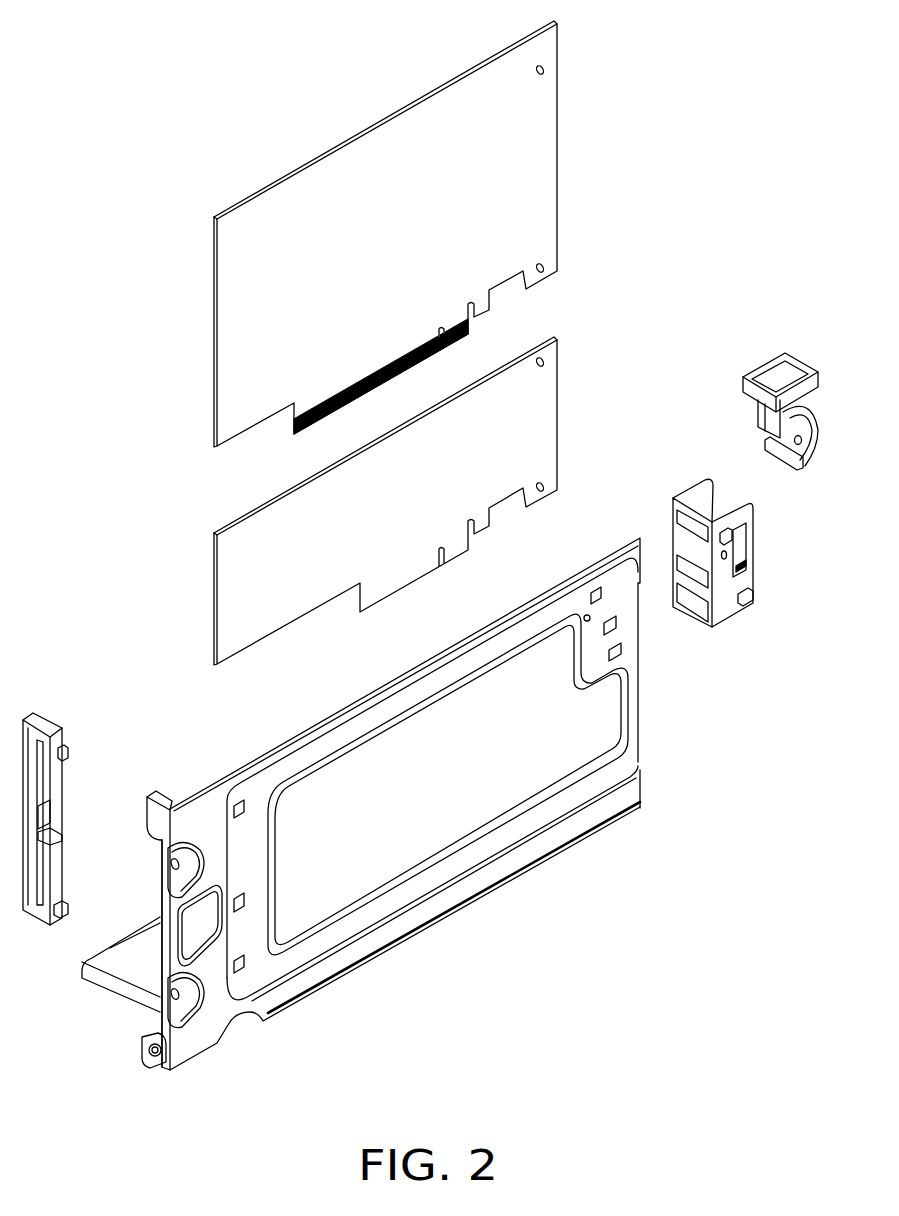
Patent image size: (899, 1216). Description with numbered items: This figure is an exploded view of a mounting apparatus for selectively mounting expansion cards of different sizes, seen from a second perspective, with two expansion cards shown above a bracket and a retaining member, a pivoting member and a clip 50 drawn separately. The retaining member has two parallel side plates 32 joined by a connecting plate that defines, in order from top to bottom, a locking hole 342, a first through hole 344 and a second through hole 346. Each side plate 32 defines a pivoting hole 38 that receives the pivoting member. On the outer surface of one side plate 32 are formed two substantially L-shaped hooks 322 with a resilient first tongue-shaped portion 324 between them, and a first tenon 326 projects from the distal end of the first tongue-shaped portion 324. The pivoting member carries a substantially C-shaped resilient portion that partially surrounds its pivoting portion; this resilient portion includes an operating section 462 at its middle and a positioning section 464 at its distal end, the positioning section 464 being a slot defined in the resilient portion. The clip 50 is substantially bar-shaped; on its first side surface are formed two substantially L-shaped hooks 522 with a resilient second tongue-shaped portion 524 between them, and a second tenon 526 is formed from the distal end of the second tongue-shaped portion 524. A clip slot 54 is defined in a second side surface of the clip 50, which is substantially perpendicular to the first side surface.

The side plate 32 is at (715, 613).
The hook 322 is at (725, 533).
The first tongue-shaped portion 324 is at (738, 550).
The first tenon 326 is at (746, 567).
The locking hole 342 is at (677, 512).
The first through hole 344 is at (677, 563).
The second through hole 346 is at (702, 603).
The pivoting hole 38 is at (724, 560).
The operating section 462 is at (820, 436).
The positioning section 464 is at (800, 463).
The clip 50 is at (74, 716).
The clip slot 54 is at (43, 720).
The hook 522 is at (68, 749).
The second tongue-shaped portion 524 is at (60, 825).
The second tenon 526 is at (63, 835).